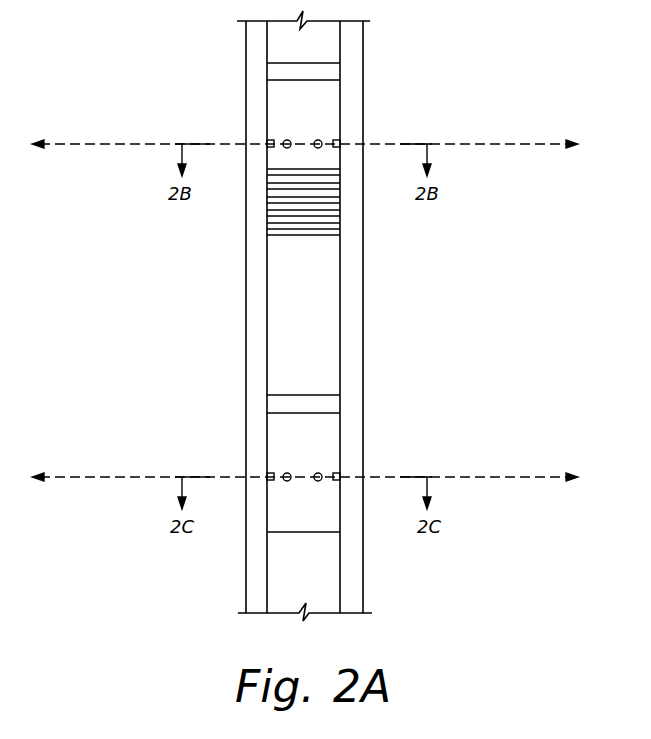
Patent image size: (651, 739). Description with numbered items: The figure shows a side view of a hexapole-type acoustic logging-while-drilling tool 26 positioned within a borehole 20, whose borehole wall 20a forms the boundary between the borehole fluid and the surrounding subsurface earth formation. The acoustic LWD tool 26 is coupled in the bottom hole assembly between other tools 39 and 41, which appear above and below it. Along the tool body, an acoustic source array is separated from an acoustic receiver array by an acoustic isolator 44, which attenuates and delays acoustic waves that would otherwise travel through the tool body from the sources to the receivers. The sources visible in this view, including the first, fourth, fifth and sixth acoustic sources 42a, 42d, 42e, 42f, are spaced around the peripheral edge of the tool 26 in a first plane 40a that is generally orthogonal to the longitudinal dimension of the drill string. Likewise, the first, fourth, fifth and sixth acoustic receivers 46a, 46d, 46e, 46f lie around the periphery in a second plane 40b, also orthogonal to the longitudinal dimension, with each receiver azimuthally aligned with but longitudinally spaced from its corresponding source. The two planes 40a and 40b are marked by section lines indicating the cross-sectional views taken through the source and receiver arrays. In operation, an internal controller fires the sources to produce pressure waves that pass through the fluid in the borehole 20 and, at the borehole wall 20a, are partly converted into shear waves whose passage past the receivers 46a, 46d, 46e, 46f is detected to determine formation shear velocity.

The borehole 20 is at (258, 527).
The borehole wall 20a is at (363, 299).
The acoustic logging-while-drilling tool 26 is at (312, 519).
The other tool 39 is at (267, 48).
The other tool 41 is at (268, 597).
The acoustic isolator 44 is at (256, 136).
The plane 40a is at (516, 143).
The plane 40b is at (518, 476).
The first acoustic source 42a is at (336, 139).
The fourth acoustic source 42d is at (270, 139).
The fifth acoustic source 42e is at (287, 140).
The sixth acoustic source 42f is at (318, 140).
The first acoustic receiver 46a is at (336, 472).
The fourth acoustic receiver 46d is at (270, 472).
The fifth acoustic receiver 46e is at (287, 473).
The sixth acoustic receiver 46f is at (318, 473).